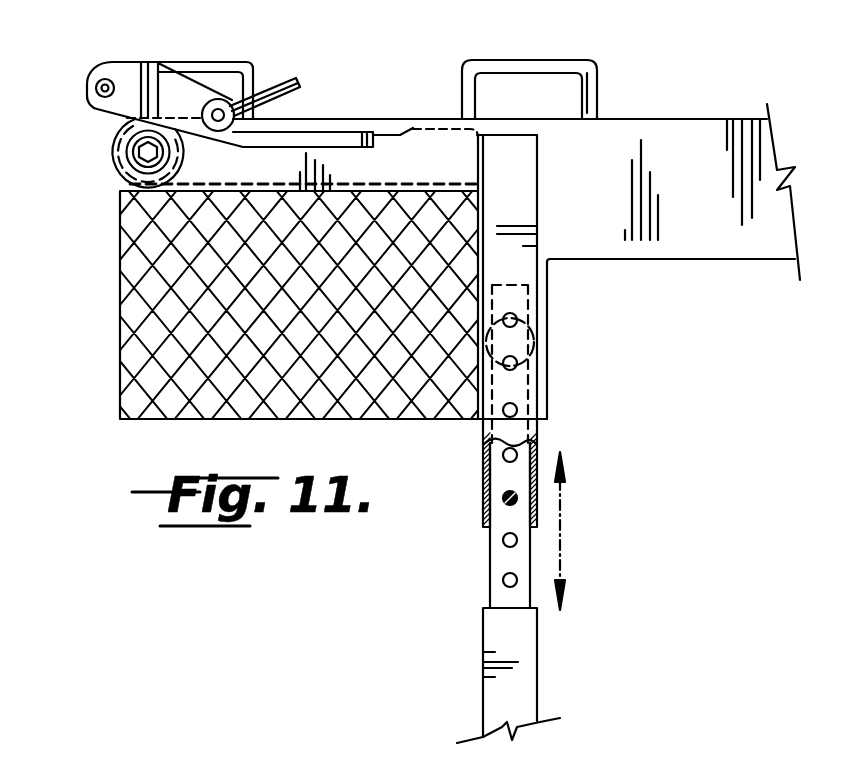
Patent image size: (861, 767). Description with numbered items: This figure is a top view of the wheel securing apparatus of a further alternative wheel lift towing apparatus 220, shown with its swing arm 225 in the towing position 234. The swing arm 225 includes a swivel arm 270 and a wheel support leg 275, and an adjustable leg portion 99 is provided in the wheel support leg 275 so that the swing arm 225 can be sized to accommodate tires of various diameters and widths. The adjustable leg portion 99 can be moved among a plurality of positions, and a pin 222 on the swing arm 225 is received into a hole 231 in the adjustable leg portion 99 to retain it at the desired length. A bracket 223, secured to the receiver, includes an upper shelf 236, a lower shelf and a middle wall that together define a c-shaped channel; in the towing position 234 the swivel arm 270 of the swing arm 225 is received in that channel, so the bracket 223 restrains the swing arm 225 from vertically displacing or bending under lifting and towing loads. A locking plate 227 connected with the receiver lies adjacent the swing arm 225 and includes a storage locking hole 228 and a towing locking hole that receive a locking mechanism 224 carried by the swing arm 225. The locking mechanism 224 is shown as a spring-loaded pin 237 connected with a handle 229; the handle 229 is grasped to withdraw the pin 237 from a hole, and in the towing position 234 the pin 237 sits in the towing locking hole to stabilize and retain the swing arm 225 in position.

The wheel lift towing apparatus 220 is at (118, 350).
The pin 222 is at (516, 490).
The bracket 223 is at (382, 157).
The locking mechanism 224 is at (270, 78).
The swing arm 225 is at (578, 327).
The locking plate 227 is at (158, 67).
The storage locking hole 228 is at (105, 79).
The handle 229 is at (300, 84).
The hole 231 is at (516, 535).
The towing position 234 is at (557, 668).
The upper shelf 236 is at (447, 150).
The spring-loaded pin 237 is at (229, 108).
The swivel arm 270 is at (385, 117).
The wheel support leg 275 is at (545, 645).
The adjustable leg portion 99 is at (578, 528).